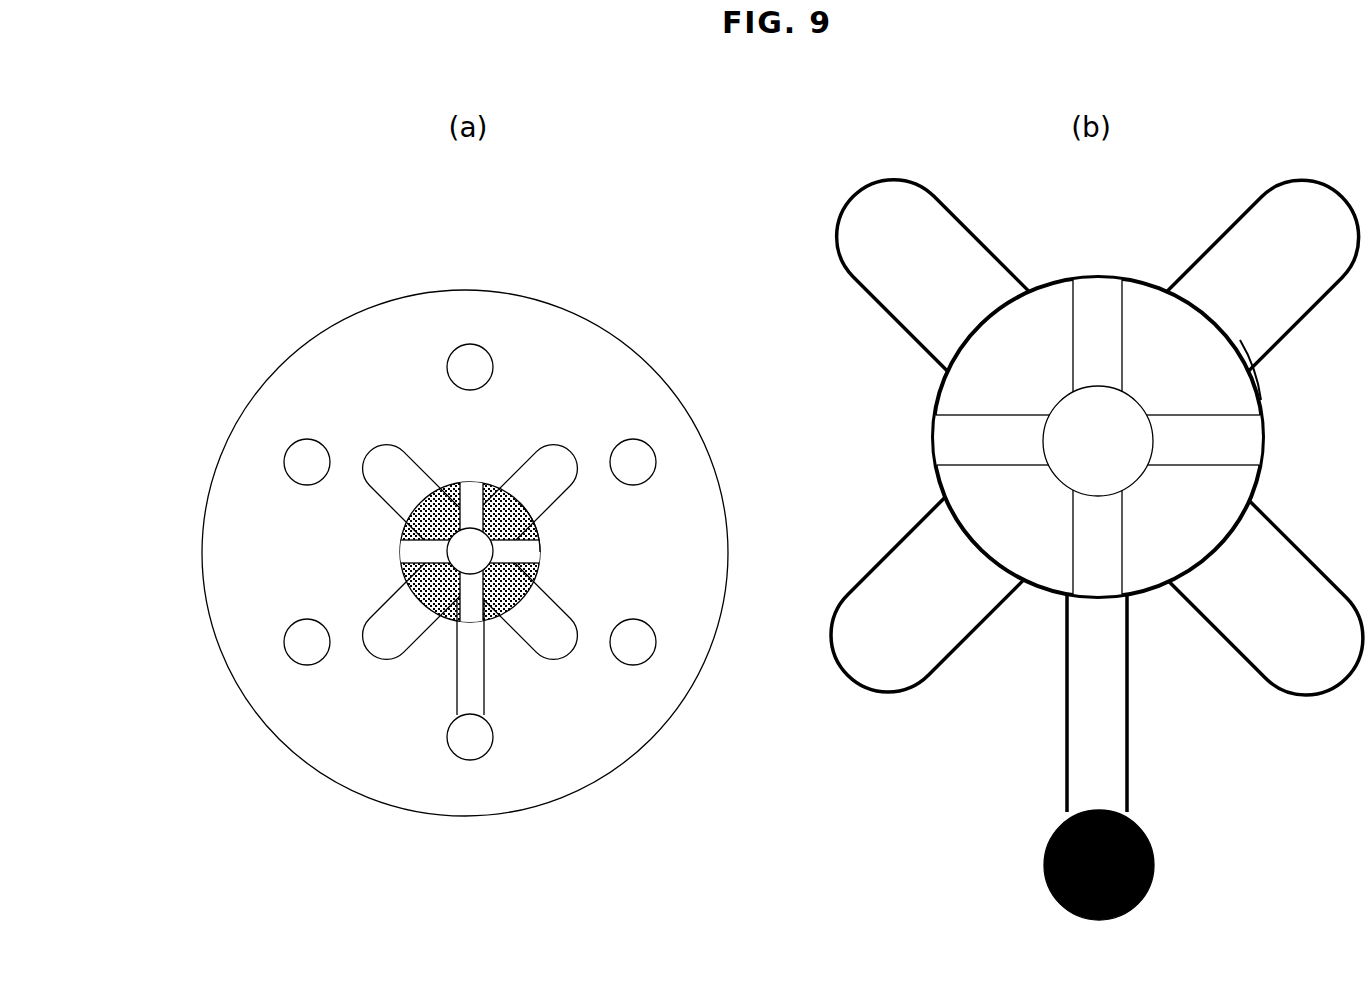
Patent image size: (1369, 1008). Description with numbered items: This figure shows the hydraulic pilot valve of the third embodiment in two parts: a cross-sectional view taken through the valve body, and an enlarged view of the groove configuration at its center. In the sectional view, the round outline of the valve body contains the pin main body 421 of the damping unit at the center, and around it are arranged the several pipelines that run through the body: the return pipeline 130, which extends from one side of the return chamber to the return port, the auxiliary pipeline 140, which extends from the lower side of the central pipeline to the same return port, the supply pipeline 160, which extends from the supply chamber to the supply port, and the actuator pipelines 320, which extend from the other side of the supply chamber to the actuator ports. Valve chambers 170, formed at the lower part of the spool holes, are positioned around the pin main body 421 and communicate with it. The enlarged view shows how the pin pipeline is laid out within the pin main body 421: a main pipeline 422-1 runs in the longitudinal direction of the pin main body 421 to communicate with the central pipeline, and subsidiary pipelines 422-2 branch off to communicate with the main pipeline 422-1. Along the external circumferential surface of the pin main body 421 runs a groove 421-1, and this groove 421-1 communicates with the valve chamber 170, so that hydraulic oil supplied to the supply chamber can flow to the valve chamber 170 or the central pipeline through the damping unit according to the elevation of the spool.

The return pipeline 130 is at (483, 767).
The auxiliary pipeline 140 is at (488, 688).
The supply pipeline 160 is at (468, 346).
The valve chamber 170 is at (368, 447).
The actuator pipeline 320 is at (648, 442).
The pin main body 421 is at (403, 531).
The groove 421-1 is at (540, 543).
The main pipeline 422-1 is at (465, 528).
The subsidiary pipeline 422-2 is at (498, 483).